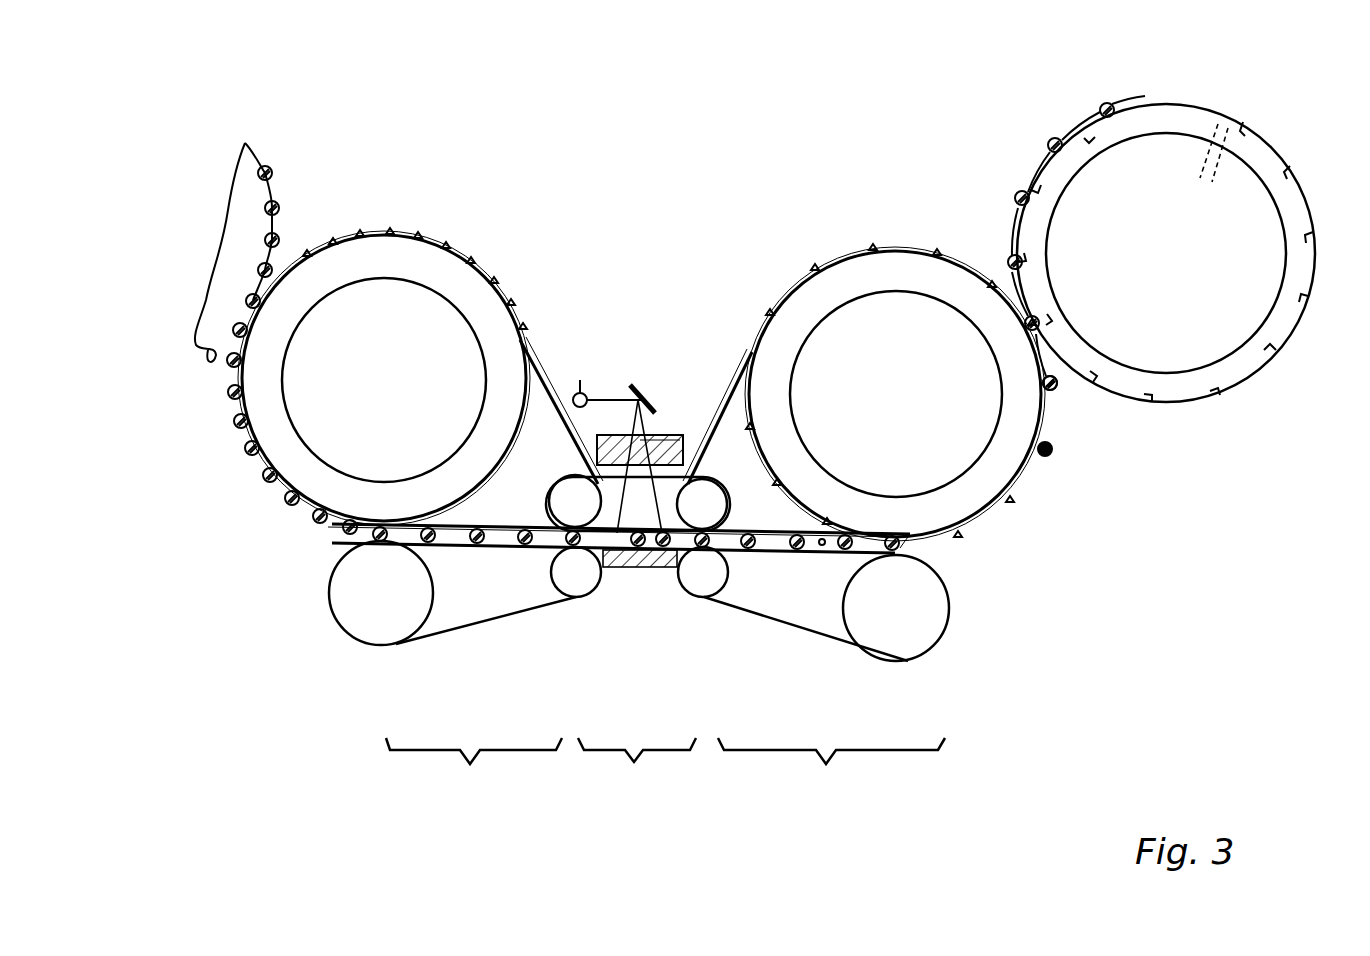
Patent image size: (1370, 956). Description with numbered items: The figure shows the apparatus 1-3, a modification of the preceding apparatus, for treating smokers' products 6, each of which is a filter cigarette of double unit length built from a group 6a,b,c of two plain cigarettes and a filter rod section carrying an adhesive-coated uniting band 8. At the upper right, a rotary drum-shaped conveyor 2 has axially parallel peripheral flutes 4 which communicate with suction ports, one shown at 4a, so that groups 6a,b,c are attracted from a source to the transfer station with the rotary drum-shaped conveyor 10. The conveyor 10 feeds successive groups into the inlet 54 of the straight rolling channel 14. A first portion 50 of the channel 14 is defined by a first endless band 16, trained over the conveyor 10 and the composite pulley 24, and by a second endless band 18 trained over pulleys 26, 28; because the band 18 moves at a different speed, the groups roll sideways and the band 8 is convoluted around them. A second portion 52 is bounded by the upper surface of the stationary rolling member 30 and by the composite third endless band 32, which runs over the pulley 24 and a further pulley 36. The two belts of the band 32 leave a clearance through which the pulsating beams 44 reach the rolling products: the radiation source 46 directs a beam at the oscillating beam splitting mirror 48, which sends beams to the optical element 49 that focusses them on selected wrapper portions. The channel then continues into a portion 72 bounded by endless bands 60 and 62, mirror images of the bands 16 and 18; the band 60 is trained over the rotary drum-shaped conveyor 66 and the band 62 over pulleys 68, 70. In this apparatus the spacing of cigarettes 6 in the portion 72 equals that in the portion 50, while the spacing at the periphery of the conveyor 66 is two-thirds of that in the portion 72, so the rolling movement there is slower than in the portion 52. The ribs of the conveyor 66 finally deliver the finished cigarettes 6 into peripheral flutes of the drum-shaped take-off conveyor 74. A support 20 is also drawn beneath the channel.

The apparatus 1-3 is at (714, 136).
The rotary drum-shaped conveyor 2 is at (1246, 300).
The axially parallel peripheral flutes 4 is at (1280, 150).
The suction port 4a is at (1232, 178).
The smokers' products 6 is at (272, 170).
The group of coaxial rod-shaped articles 6a,b,c is at (1052, 450).
The uniting band 8 is at (1056, 138).
The rotary drum-shaped conveyor 10 is at (962, 444).
The straight rolling channel 14 is at (455, 535).
The first endless band 16 is at (737, 382).
The second endless band 18 is at (748, 618).
The belt support 20 is at (822, 540).
The composite pulley 24 is at (704, 496).
The pulley 26 is at (926, 625).
The pulley 28 is at (702, 582).
The stationary rolling member 30 is at (655, 568).
The composite third endless band 32 is at (732, 507).
The pulley 36 is at (564, 495).
The pulsating beams of corpuscular radiation 44 is at (620, 510).
The radiation source 46 is at (606, 375).
The oscillating beam splitting mirror 48 is at (638, 385).
The optical element 49 is at (678, 447).
The first portion of the rolling channel 50 is at (831, 771).
The second portion of the rolling channel 52 is at (637, 770).
The inlet 54 is at (908, 548).
The endless band 60 is at (545, 388).
The endless band 62 is at (405, 642).
The rotary drum-shaped conveyor 66 is at (412, 320).
The pulley 68 is at (368, 618).
The pulley 70 is at (575, 582).
The portion of the rolling channel 72 is at (474, 770).
The drum-shaped take-off conveyor 74 is at (216, 350).